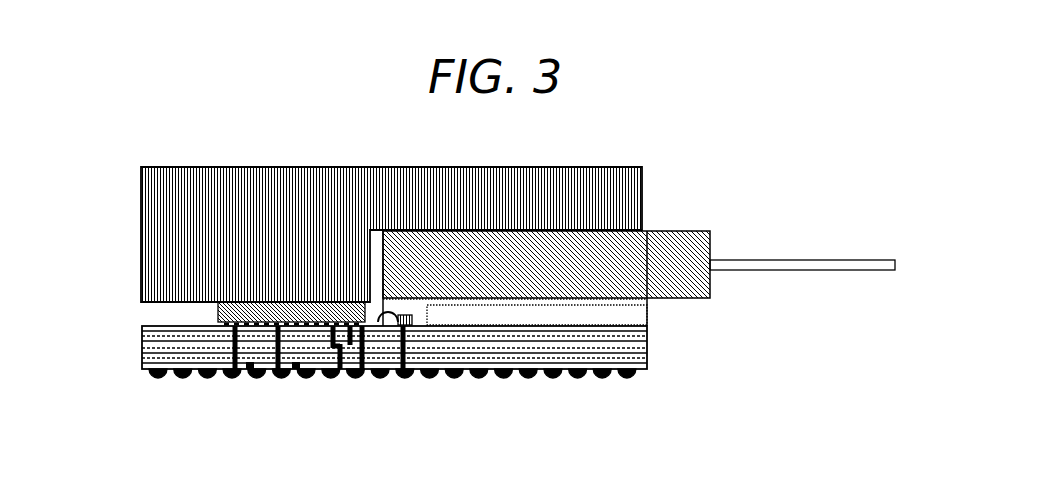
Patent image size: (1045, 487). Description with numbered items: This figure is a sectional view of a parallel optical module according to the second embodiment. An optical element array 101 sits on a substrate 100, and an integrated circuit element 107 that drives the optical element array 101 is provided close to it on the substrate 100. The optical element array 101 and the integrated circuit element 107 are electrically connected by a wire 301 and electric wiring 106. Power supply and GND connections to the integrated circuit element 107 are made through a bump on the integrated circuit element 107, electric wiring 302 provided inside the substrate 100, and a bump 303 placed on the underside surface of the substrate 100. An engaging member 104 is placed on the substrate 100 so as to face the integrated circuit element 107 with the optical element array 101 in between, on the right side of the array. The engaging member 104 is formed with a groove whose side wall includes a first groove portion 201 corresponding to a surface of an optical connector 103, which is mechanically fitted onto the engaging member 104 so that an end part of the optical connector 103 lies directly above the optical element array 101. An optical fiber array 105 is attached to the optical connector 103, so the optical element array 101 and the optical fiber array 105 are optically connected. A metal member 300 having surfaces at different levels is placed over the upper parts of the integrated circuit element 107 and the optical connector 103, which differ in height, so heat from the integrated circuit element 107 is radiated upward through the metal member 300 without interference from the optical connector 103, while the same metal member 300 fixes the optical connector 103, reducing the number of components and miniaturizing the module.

The metal member 300 is at (297, 192).
The integrated circuit element 107 is at (217, 306).
The substrate 100 is at (143, 350).
The electric wiring 302 is at (252, 372).
The bump 303 is at (335, 376).
The electric wiring 106 is at (363, 377).
The wire 301 is at (397, 373).
The optical element array 101 is at (440, 375).
The first groove portion 201 is at (540, 308).
The engaging member 104 is at (647, 312).
The optical connector 103 is at (695, 268).
The optical fiber array 105 is at (777, 259).